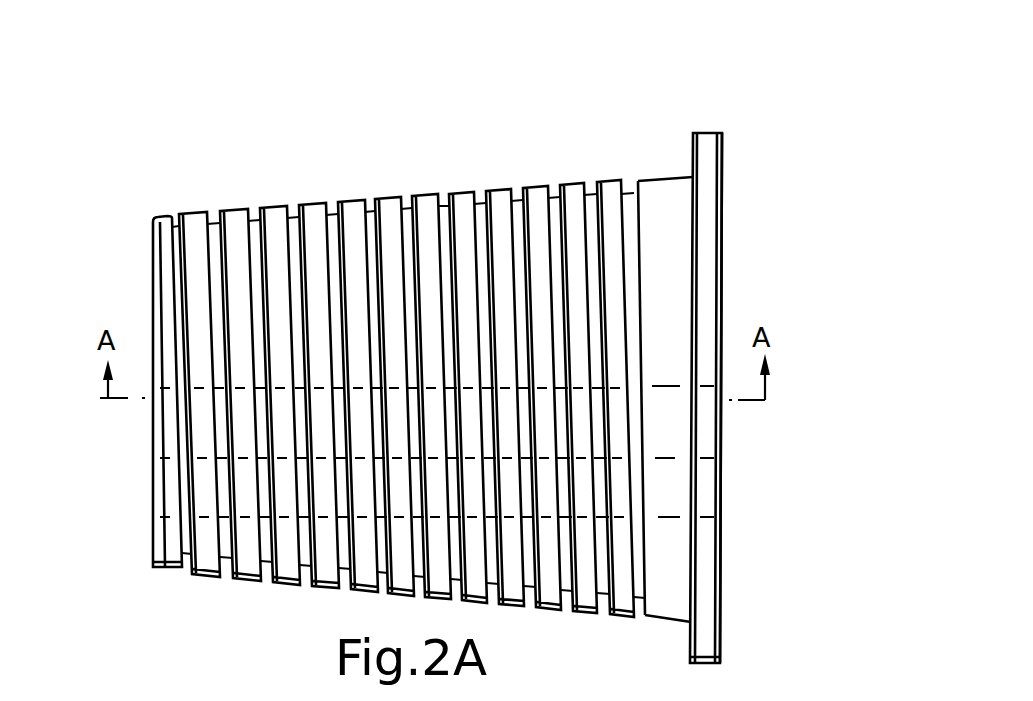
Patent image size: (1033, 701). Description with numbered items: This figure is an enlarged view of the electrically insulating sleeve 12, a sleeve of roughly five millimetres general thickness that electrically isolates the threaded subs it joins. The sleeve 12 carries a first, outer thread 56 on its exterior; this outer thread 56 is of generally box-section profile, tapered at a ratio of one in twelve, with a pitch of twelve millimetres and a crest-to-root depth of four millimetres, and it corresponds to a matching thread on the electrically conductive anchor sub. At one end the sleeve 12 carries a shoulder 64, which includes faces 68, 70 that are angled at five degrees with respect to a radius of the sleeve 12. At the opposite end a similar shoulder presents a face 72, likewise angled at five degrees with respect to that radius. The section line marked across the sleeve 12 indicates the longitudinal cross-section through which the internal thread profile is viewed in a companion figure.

The electrically insulating sleeve 12 is at (757, 105).
The outer thread 56 is at (341, 179).
The shoulder 64 is at (712, 132).
The face 68 is at (727, 180).
The face 70 is at (690, 172).
The face 72 is at (152, 263).